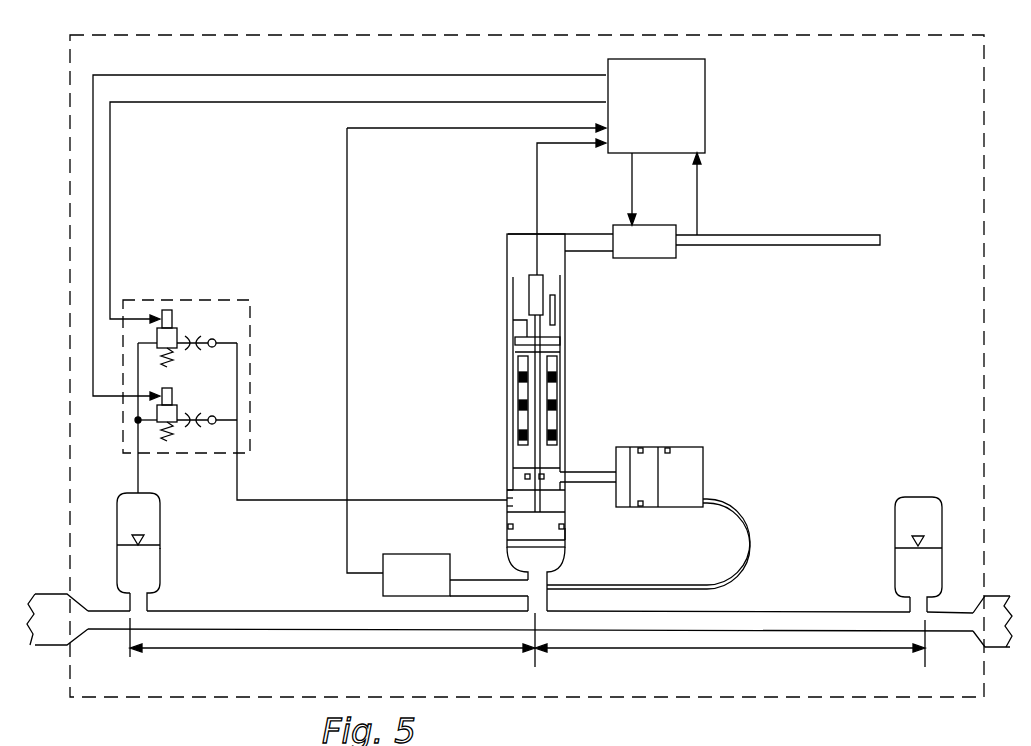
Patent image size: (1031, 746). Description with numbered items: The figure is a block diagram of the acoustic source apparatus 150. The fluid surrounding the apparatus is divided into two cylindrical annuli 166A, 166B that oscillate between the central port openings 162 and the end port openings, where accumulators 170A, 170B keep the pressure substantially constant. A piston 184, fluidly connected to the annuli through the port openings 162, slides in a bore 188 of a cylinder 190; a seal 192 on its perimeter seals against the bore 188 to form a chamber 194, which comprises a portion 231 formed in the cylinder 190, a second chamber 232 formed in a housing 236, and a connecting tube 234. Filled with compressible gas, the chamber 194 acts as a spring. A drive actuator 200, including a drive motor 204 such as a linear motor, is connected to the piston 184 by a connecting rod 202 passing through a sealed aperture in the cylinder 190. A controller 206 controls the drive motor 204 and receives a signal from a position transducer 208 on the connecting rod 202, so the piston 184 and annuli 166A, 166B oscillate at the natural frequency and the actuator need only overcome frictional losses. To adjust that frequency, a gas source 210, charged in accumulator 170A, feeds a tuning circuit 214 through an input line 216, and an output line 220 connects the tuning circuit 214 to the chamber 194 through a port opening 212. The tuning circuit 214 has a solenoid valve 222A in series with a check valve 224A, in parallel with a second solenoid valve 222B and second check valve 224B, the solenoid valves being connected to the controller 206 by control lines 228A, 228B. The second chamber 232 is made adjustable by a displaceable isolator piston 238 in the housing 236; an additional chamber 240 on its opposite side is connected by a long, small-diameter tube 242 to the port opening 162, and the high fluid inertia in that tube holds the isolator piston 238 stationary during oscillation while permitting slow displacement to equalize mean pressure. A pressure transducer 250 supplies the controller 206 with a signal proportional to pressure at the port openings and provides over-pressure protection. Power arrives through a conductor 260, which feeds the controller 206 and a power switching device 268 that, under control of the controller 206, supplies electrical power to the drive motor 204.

The apparatus 150 is at (785, 35).
The port openings 162 is at (556, 613).
The cylindrical annulus of fluid 166A is at (290, 650).
The cylindrical annulus of fluid 166B is at (658, 650).
The accumulator 170A is at (170, 550).
The accumulator 170B is at (919, 486).
The piston 184 is at (563, 530).
The bore 188 is at (512, 553).
The cylinder 190 is at (565, 500).
The seal 192 is at (565, 530).
The chamber 194 is at (507, 490).
The drive actuator 200 is at (678, 315).
The connecting rod 202 is at (530, 337).
The drive motor 204 is at (515, 415).
The controller 206 is at (706, 84).
The position transducer 208 is at (527, 283).
The gas source 210 is at (150, 494).
The port opening 212 is at (507, 498).
The tuning circuit 214 is at (195, 300).
The input line 216 is at (137, 474).
The output line 220 is at (257, 500).
The solenoid valve 222A is at (170, 308).
The second solenoid valve 222B is at (168, 388).
The check valve 224A is at (214, 339).
The second check valve 224B is at (214, 420).
The control line 228A is at (186, 104).
The control line 228B is at (305, 76).
The portion 231 is at (507, 506).
The chamber 232 is at (625, 508).
The connecting tube 234 is at (572, 470).
The housing 236 is at (704, 455).
The isolator piston 238 is at (639, 447).
The chamber 240 is at (668, 447).
The tube 242 is at (722, 505).
The pressure transducer 250 is at (383, 588).
The conductor 260 is at (790, 236).
The power switching device 268 is at (645, 226).